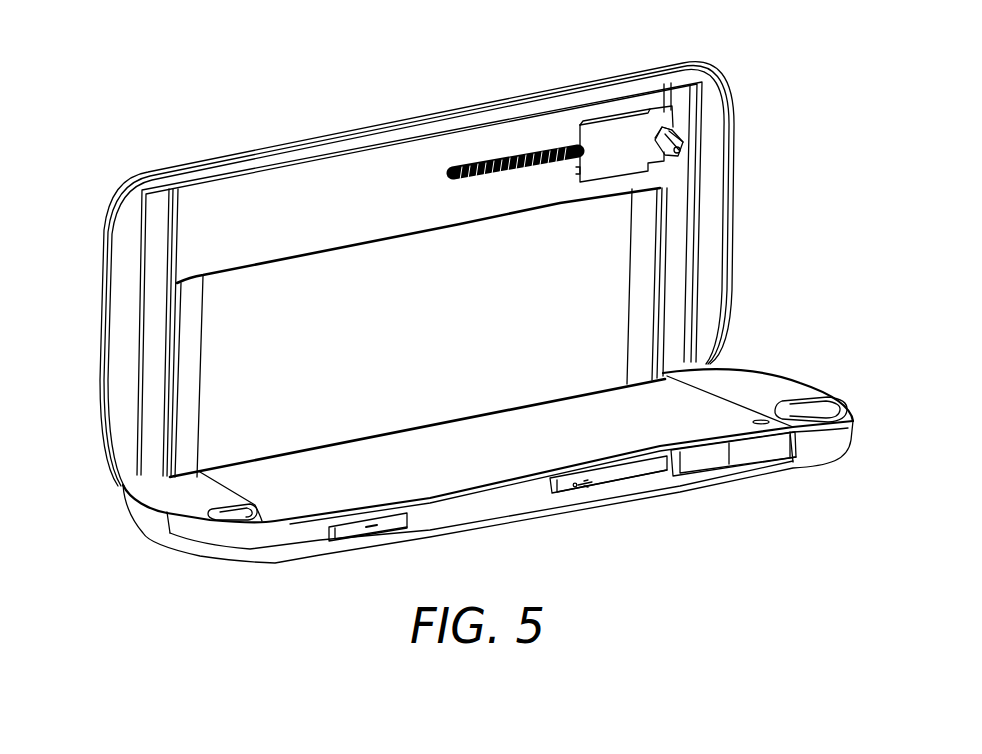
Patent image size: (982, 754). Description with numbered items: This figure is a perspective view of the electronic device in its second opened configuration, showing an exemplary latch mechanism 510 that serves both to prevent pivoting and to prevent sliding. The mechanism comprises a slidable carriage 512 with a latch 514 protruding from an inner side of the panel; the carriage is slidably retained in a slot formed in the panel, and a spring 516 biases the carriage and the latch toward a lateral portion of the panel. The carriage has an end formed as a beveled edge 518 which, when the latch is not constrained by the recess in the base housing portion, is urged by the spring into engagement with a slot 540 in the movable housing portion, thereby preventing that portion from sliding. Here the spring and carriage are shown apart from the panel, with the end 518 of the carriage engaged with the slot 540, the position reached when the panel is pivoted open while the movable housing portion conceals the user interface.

The latch mechanism 510 is at (603, 142).
The slidable carriage 512 is at (590, 183).
The latch 514 is at (680, 140).
The spring 516 is at (471, 184).
The beveled edge 518 is at (673, 120).
The slot 540 is at (676, 130).